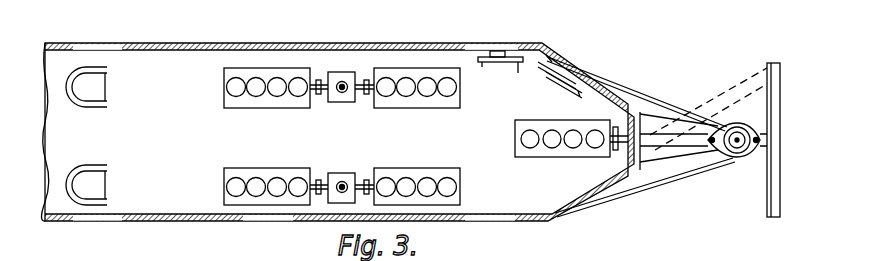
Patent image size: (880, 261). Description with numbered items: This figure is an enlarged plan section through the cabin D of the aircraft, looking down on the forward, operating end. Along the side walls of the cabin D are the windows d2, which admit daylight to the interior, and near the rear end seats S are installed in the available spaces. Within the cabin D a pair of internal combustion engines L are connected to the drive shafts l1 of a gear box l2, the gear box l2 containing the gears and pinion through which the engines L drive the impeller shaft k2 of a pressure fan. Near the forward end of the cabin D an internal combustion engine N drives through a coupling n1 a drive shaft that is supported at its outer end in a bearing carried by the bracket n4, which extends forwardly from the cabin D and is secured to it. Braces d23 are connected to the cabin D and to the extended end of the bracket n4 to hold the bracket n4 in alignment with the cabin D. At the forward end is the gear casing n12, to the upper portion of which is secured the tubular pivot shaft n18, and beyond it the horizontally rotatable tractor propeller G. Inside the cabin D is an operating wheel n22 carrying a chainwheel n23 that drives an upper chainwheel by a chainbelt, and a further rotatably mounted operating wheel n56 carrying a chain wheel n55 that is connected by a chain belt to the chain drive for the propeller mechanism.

The cabin D is at (341, 132).
The windows d2 is at (98, 43).
The seats S is at (88, 165).
The internal combustion engines L is at (252, 170).
The impeller shaft k2 is at (343, 84).
The drive shaft l1 is at (318, 178).
The gear box l2 is at (342, 173).
The chain wheel n55 is at (495, 56).
The operating wheel n56 is at (487, 63).
The operating wheel n22 is at (566, 86).
The chainwheel n23 is at (557, 58).
The braces d23 is at (636, 88).
The internal combustion engine N is at (535, 156).
The coupling n1 is at (615, 160).
The bracket n4 is at (678, 152).
The gear casing n12 is at (739, 155).
The tubular pivot shaft n18 is at (741, 127).
The tractor propeller G is at (774, 196).